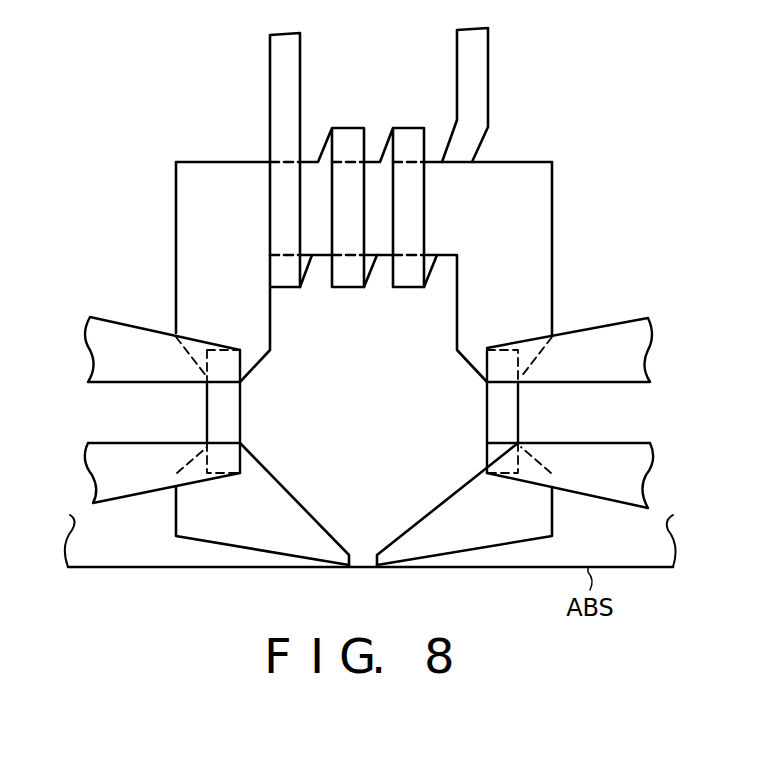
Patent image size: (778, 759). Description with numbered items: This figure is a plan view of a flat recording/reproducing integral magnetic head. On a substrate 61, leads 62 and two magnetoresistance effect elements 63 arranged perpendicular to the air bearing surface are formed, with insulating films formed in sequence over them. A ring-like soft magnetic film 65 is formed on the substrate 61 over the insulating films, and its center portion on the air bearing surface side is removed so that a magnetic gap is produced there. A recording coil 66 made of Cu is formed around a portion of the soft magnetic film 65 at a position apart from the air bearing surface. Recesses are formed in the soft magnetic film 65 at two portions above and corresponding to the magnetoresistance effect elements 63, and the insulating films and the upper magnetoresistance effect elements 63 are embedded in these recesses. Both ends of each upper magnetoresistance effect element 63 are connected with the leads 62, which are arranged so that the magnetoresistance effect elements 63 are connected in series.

The substrate 61 is at (150, 552).
The leads 62 is at (125, 342).
The magnetoresistance effect elements 63 is at (493, 403).
The soft magnetic film 65 is at (223, 183).
The recording coil 66 is at (480, 95).